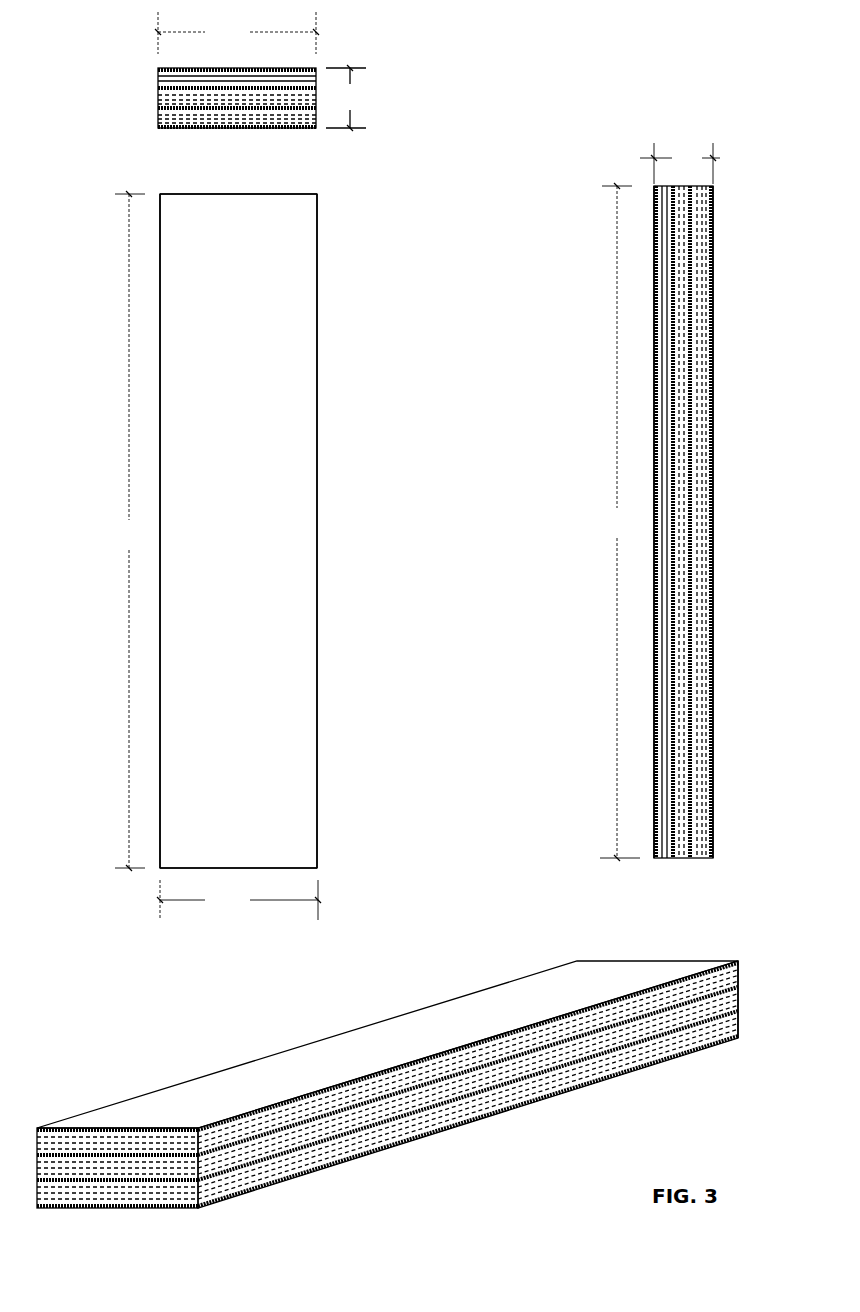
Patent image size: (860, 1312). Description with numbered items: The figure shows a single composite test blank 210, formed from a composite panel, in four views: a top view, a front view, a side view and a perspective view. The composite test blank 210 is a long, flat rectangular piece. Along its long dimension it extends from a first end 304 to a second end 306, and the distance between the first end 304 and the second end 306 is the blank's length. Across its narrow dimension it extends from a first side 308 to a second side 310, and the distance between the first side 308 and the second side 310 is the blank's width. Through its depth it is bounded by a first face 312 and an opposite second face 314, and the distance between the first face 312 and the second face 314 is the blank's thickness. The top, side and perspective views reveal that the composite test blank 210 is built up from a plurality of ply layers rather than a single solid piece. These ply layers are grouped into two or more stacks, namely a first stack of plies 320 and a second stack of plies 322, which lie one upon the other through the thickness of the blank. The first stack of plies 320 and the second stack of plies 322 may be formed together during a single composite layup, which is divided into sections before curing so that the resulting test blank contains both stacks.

The composite test blank 210 is at (118, 42).
The first end 304 is at (265, 194).
The second end 306 is at (196, 868).
The first side 308 is at (160, 265).
The second side 310 is at (317, 265).
The first face 312 is at (224, 254).
The second face 314 is at (713, 280).
The first stack of plies 320 is at (748, 999).
The second stack of plies 322 is at (744, 1020).